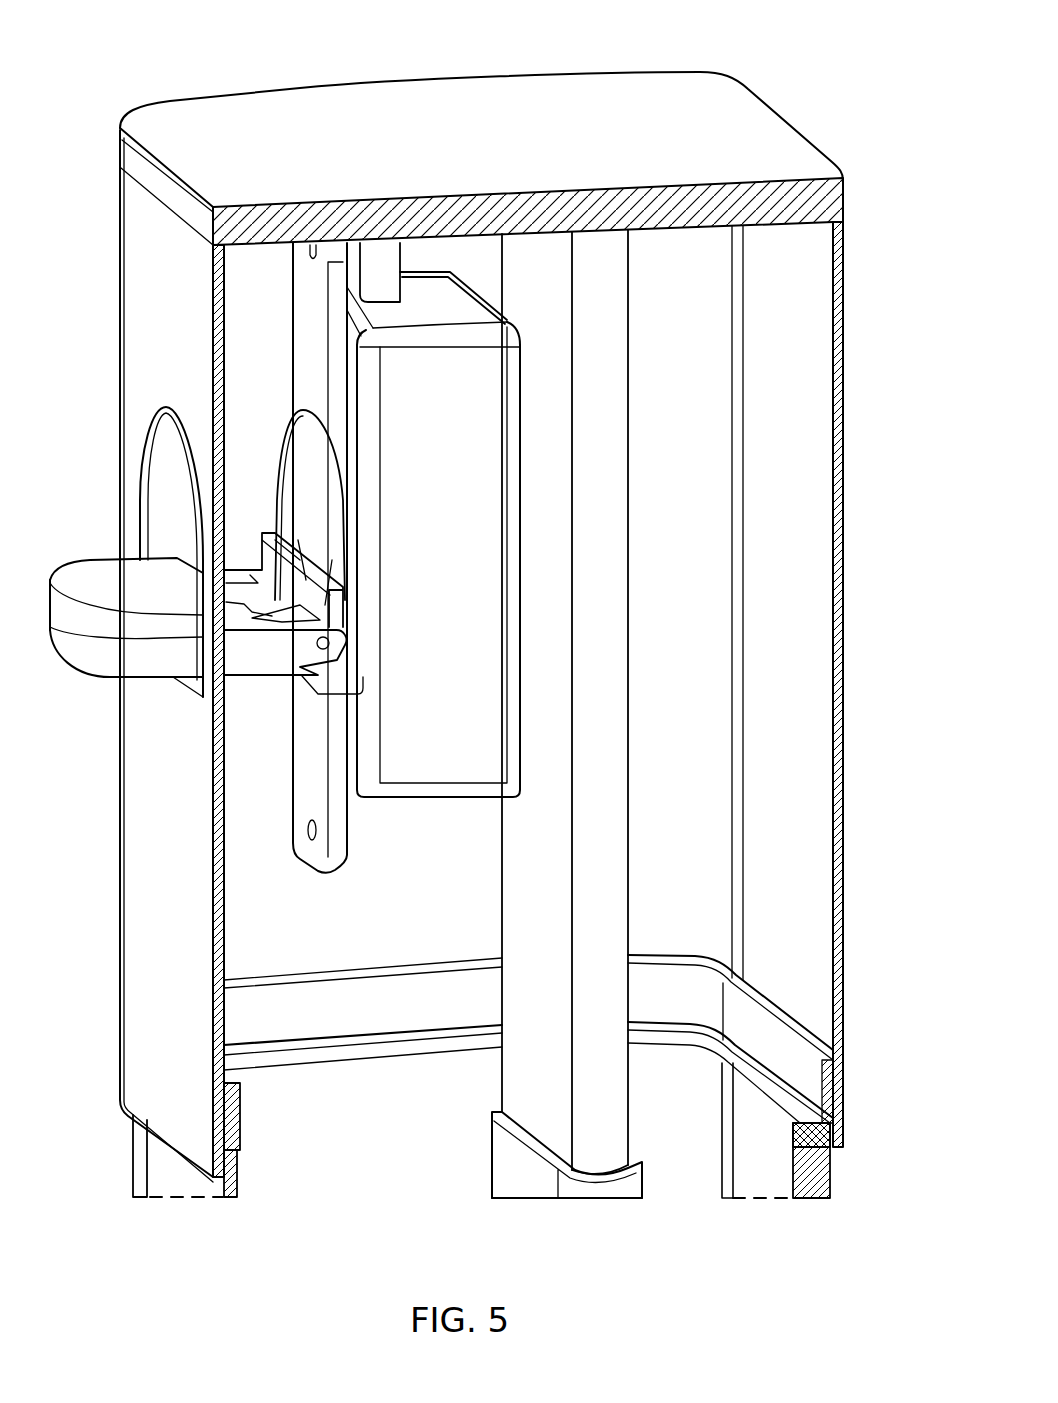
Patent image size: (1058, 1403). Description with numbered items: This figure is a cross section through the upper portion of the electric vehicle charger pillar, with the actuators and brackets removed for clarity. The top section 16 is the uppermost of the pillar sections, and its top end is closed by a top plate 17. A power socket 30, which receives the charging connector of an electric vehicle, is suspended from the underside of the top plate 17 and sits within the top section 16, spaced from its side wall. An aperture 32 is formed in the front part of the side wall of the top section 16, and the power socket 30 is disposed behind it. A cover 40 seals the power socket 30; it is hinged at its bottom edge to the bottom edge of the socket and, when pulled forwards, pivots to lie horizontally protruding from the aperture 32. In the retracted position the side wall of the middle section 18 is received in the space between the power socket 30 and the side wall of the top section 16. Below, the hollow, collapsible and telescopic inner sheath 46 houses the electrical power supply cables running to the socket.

The top section 16 is at (810, 298).
The top plate 17 is at (675, 98).
The middle section 18 is at (158, 1162).
The power socket 30 is at (293, 458).
The aperture 32 is at (190, 534).
The cover 40 is at (88, 657).
The inner sheath 46 is at (515, 1173).